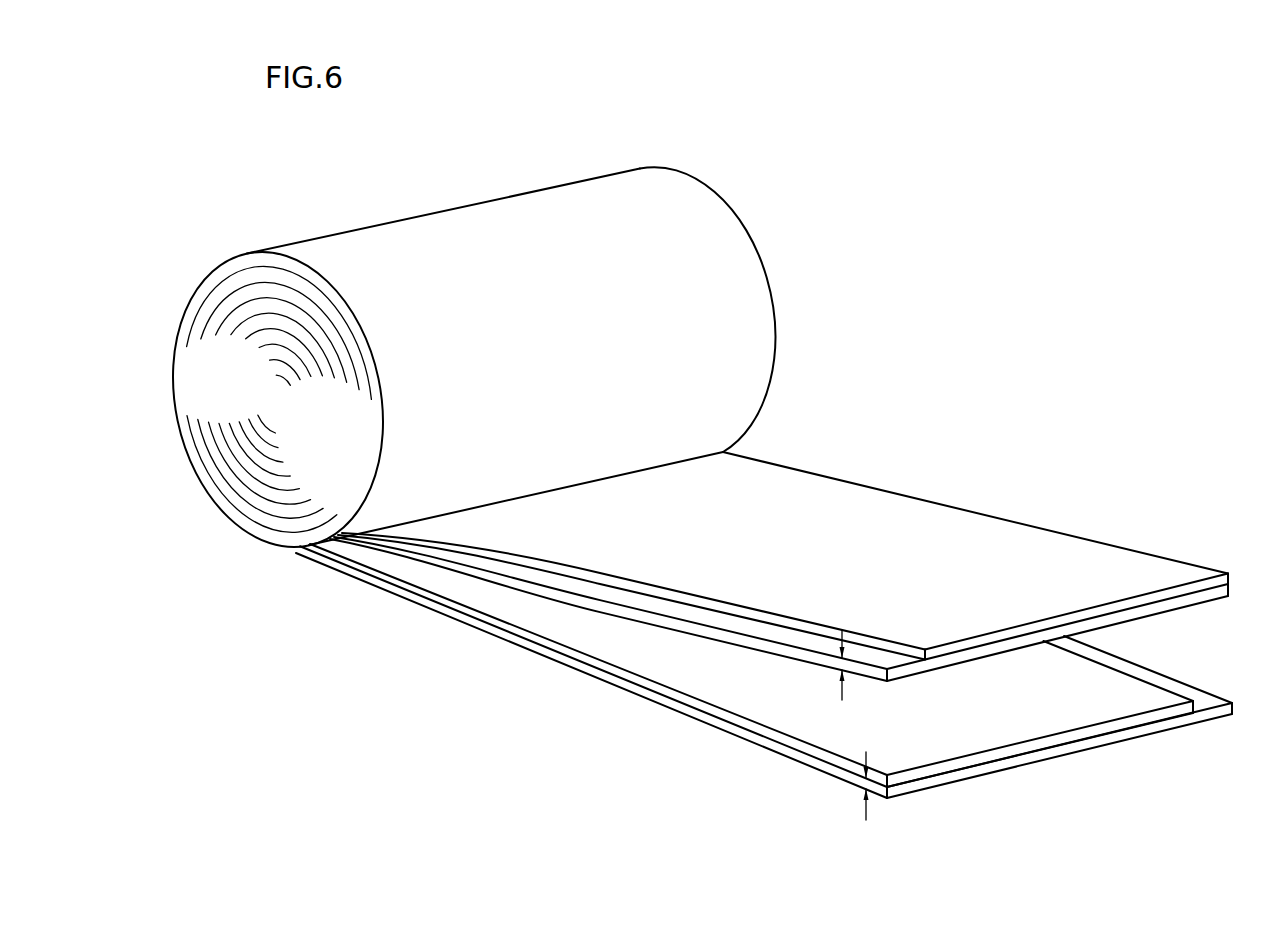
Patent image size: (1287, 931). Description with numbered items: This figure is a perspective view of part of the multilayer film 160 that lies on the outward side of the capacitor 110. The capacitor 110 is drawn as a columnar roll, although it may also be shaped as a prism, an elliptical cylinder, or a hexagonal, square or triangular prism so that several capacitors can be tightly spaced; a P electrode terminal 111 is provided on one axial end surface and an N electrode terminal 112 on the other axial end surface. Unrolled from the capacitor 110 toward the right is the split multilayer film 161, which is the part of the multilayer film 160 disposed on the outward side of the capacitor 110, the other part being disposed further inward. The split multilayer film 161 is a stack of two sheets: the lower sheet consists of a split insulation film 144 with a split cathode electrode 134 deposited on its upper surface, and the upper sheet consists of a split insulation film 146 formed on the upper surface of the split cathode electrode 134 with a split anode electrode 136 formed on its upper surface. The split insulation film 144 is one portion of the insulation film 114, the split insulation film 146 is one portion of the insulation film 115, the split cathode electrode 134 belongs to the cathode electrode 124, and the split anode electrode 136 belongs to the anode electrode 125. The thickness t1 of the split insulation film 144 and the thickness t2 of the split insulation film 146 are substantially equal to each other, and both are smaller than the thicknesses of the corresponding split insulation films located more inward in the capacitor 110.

The capacitor 110 is at (420, 156).
The P electrode terminal 111 is at (223, 467).
The N electrode terminal 112 is at (780, 324).
The split multilayer film 161 is at (1045, 432).
The multilayer film 160 is at (779, 635).
The split anode electrode 136 is at (936, 523).
The anode electrode 125 is at (783, 555).
The split insulation film 146 is at (647, 598).
The insulation film 115 is at (779, 648).
The split cathode electrode 134 is at (705, 684).
The cathode electrode 124 is at (746, 667).
The split insulation film 144 is at (765, 740).
The insulation film 114 is at (764, 691).
The thickness of split insulation film 144 t1 is at (866, 816).
The thickness of split insulation film 146 t2 is at (842, 693).